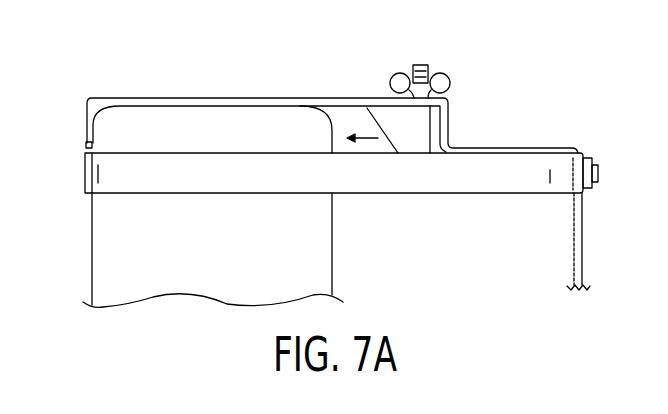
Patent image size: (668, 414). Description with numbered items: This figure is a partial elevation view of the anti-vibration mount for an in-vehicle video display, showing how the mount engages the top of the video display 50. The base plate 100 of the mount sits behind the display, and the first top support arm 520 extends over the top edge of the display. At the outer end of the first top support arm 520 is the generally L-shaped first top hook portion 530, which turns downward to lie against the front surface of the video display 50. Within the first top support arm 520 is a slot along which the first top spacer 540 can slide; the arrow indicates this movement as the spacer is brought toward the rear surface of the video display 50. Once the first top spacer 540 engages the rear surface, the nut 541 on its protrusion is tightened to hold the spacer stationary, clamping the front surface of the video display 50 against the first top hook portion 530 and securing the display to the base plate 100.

The video display 50 is at (227, 257).
The base plate 100 is at (582, 258).
The first top support arm 520 is at (210, 98).
The first top hook portion 530 is at (87, 123).
The first top spacer 540 is at (417, 123).
The nut 541 is at (390, 87).